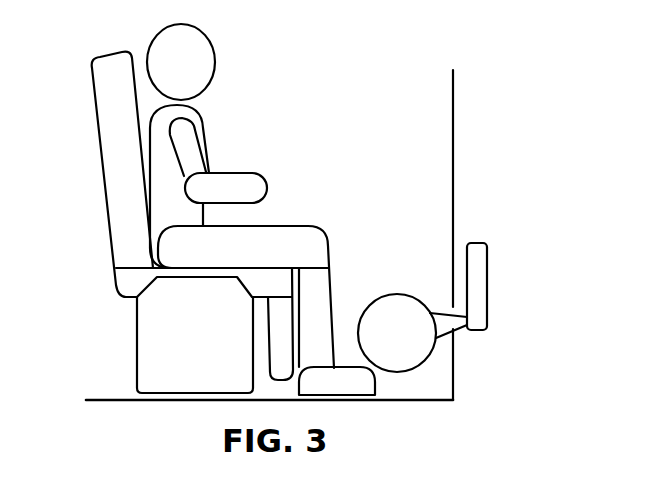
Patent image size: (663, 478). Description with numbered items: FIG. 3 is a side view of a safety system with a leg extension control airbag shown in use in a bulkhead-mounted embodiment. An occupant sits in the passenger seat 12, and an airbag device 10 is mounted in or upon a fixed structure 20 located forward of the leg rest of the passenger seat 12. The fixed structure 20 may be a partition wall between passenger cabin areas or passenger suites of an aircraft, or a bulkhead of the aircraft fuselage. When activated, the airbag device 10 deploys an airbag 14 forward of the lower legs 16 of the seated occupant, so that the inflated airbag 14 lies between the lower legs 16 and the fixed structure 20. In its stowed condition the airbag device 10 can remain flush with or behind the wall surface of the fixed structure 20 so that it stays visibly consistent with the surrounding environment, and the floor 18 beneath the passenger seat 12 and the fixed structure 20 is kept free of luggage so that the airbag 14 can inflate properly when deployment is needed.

The airbag device 10 is at (488, 297).
The passenger seat 12 is at (137, 285).
The airbag 14 is at (412, 341).
The lower legs 16 is at (332, 293).
The floor 18 is at (102, 402).
The fixed structure 20 is at (455, 140).